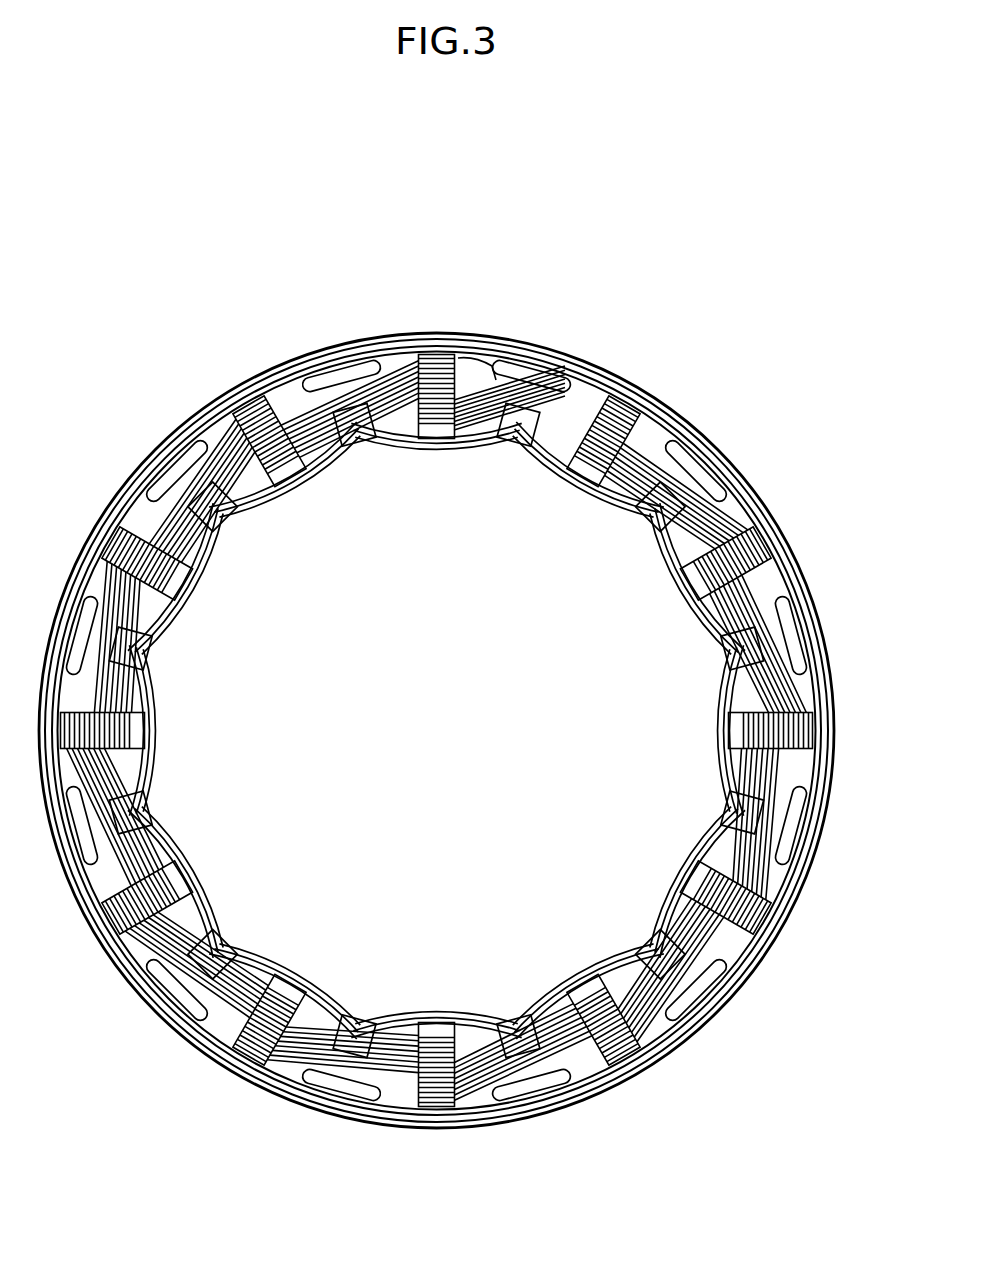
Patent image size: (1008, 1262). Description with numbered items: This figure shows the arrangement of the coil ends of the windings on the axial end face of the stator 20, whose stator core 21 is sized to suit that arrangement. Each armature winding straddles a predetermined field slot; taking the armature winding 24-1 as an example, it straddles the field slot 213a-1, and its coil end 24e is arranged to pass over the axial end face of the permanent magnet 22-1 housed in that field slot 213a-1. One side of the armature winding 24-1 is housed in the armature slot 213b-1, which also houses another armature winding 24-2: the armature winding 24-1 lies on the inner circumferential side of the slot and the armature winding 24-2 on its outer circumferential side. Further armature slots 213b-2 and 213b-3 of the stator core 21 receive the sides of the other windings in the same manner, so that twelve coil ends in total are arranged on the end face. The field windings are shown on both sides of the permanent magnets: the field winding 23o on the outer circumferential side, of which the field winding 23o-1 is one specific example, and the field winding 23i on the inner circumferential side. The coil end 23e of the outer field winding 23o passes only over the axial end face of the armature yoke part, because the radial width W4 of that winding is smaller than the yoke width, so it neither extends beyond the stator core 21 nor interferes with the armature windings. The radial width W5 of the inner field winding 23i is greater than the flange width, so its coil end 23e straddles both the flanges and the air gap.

The stator 20 is at (777, 129).
The stator core 21 is at (818, 838).
The permanent magnet 22-1 is at (547, 432).
The coil end of field winding 23e is at (302, 480).
The field winding on inner circumferential side 23i is at (225, 906).
The field winding on outer circumferential side 23o is at (282, 1085).
The field winding on outer circumferential side 23o-1 is at (668, 415).
The armature winding 24-1 is at (483, 405).
The armature winding 24-2 is at (402, 362).
The coil end of armature winding 24e is at (492, 362).
The field slot 213a-1 is at (511, 447).
The armature slot 213b-1 is at (460, 350).
The armature slot 213b-2 is at (620, 397).
The armature slot 213b-3 is at (278, 405).
The radial width of field winding on outer circumferential side W4 is at (228, 1028).
The radial width of field winding on inner circumferential side W5 is at (176, 884).